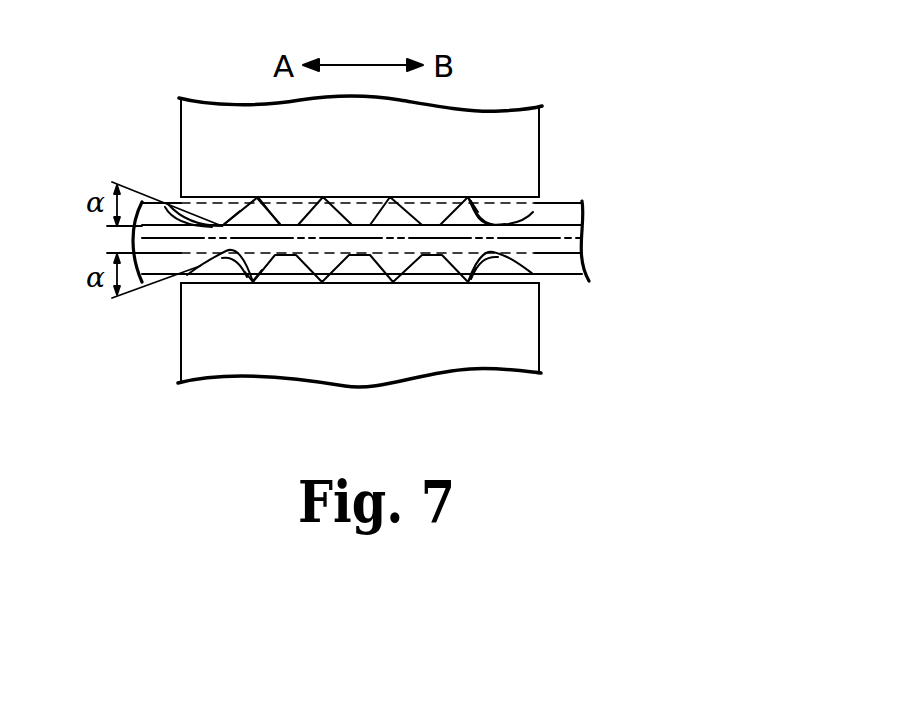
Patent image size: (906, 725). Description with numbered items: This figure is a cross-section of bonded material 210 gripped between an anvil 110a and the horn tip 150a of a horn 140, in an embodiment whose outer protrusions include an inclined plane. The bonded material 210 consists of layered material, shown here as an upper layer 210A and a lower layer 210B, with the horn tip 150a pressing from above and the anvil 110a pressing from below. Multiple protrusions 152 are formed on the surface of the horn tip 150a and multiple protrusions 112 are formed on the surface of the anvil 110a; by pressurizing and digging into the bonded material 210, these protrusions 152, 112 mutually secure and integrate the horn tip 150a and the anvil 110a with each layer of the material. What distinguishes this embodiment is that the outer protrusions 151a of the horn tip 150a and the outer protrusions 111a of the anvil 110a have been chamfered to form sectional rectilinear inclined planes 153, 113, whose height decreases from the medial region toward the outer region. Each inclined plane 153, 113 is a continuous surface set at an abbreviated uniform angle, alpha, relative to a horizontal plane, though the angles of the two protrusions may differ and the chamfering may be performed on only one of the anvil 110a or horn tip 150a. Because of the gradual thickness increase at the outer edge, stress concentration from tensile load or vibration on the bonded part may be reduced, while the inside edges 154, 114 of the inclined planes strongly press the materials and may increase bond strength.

The horn 140 is at (565, 110).
The horn tip 150a is at (463, 122).
The anvil 110a is at (384, 360).
The bonded material 210 is at (697, 189).
The upper layer of bonded material 210A is at (570, 220).
The lower layer of bonded material 210B is at (570, 262).
The protrusions 152 is at (420, 212).
The inside edge of inclined plane 154 is at (257, 218).
The outer protrusion 151a is at (215, 203).
The inclined plane 153 is at (170, 206).
The protrusions 112 is at (288, 264).
The inside edge of inclined plane 114 is at (250, 270).
The outer protrusion 111a is at (220, 263).
The inclined plane 113 is at (197, 258).